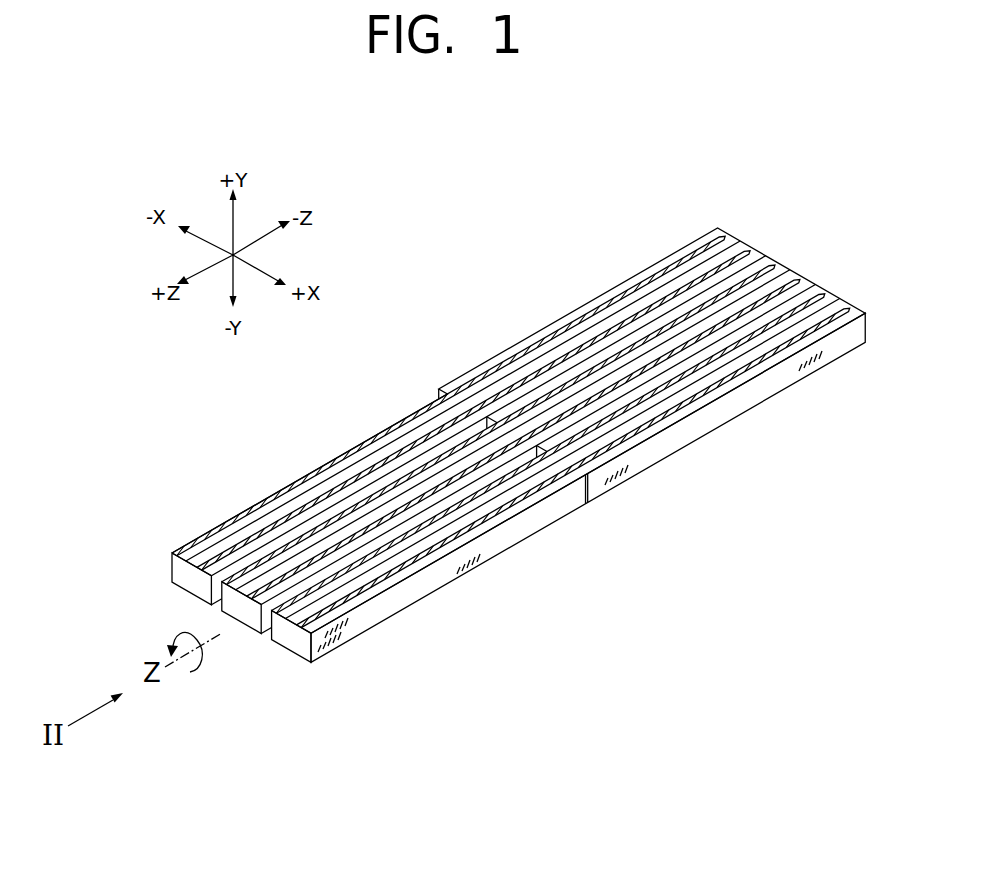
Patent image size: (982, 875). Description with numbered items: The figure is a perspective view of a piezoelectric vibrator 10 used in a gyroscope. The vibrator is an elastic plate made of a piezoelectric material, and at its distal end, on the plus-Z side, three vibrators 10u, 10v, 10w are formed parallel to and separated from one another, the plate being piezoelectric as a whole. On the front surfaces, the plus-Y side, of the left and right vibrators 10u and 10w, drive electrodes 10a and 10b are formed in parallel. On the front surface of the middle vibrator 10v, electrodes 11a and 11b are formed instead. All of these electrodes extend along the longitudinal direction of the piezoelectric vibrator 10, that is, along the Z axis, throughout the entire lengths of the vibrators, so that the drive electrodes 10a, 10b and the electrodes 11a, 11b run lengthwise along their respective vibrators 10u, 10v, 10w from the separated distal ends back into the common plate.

The piezoelectric vibrator 10 is at (583, 544).
The drive electrode 10a is at (480, 365).
The drive electrode 10b is at (552, 358).
The vibrator 10u is at (187, 577).
The middle vibrator 10v is at (238, 610).
The vibrator 10w is at (292, 642).
The electrode 11a is at (630, 352).
The electrode 11b is at (707, 327).